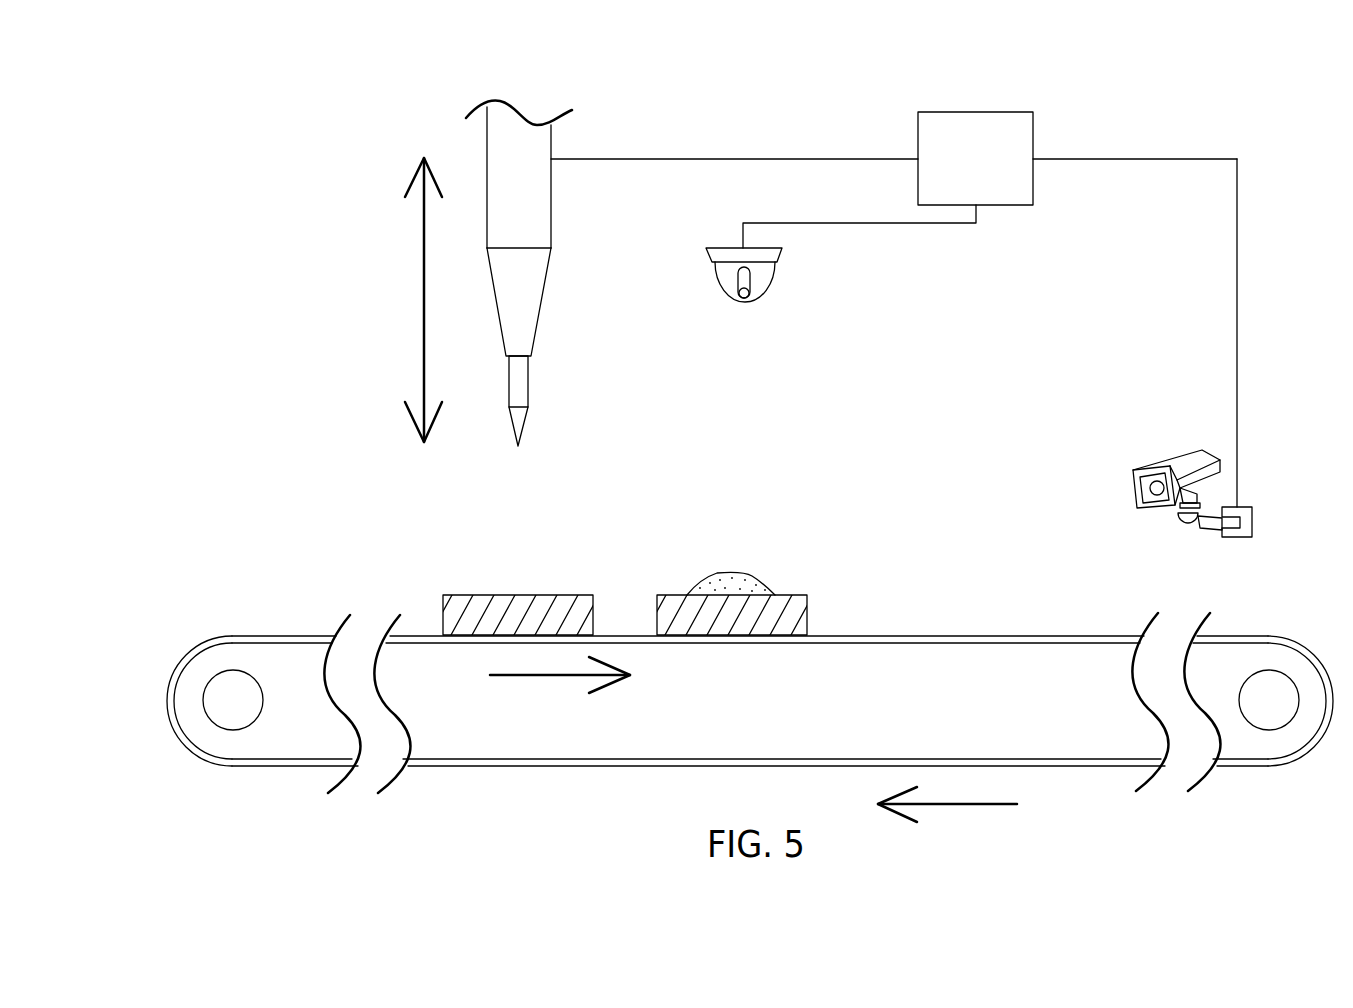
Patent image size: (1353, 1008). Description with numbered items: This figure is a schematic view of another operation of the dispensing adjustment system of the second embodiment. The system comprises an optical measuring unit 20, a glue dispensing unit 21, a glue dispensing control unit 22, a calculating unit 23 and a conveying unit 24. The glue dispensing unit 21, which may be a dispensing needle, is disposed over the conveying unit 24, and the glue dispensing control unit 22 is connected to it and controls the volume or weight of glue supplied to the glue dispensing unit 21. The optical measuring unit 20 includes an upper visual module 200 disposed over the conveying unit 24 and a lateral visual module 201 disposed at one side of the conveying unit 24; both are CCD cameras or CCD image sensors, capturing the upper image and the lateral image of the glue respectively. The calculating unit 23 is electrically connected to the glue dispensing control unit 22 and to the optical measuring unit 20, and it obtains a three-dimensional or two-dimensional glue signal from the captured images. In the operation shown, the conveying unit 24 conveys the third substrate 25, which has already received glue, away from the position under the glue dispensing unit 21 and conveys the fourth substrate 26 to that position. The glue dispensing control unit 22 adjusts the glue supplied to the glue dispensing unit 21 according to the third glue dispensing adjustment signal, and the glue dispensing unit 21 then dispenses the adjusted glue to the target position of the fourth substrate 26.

The optical measuring unit 20 is at (1040, 422).
The upper visual module 200 is at (765, 295).
The lateral visual module 201 is at (1130, 477).
The glue dispensing unit 21 is at (528, 380).
The glue dispensing control unit 22 is at (551, 138).
The calculating unit 23 is at (1033, 126).
The conveying unit 24 is at (262, 636).
The third substrate 25 is at (660, 595).
The fourth substrate 26 is at (445, 595).